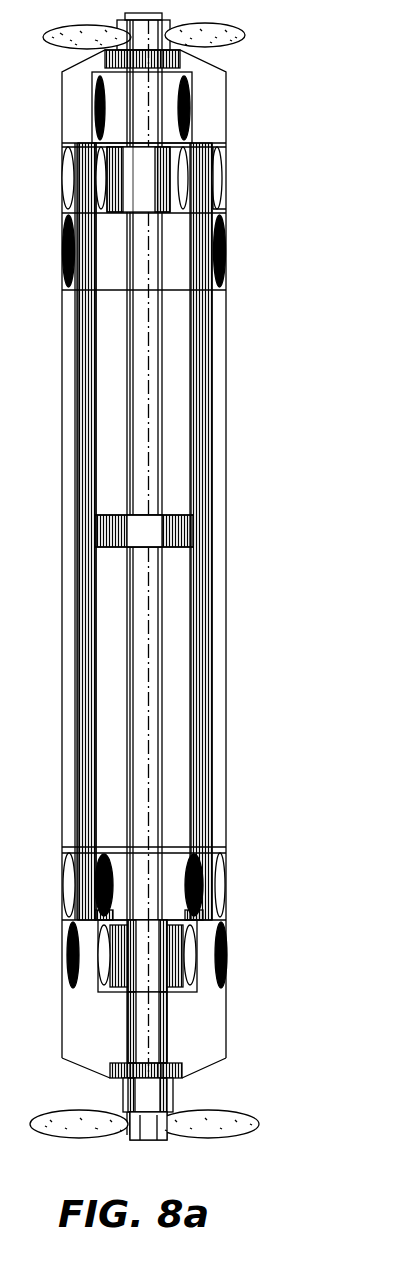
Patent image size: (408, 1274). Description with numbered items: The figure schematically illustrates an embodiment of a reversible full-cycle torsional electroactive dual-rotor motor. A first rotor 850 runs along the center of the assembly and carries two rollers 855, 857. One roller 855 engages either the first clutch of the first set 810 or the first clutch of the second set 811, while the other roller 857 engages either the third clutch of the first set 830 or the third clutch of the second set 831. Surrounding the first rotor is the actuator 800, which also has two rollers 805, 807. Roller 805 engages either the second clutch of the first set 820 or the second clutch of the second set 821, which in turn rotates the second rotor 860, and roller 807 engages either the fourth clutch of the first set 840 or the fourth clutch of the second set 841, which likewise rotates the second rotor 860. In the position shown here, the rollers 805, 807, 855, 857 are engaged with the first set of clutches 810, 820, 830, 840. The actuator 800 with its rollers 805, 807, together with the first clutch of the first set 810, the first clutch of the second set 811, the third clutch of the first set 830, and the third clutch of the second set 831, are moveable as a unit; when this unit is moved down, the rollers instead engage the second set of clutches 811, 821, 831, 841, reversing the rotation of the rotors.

The actuator 800 is at (203, 677).
The roller 805 is at (225, 202).
The roller 807 is at (228, 913).
The first clutch of the first set 810 is at (227, 148).
The first clutch of the second set 811 is at (162, 110).
The second clutch of the first set 820 is at (222, 180).
The second clutch of the second set 821 is at (77, 252).
The third clutch of the first set 830 is at (107, 960).
The third clutch of the second set 831 is at (195, 888).
The fourth clutch of the first set 840 is at (227, 858).
The fourth clutch of the second set 841 is at (230, 953).
The first rotor 850 is at (150, 588).
The roller 855 is at (157, 192).
The roller 857 is at (160, 970).
The second rotor 860 is at (220, 1060).